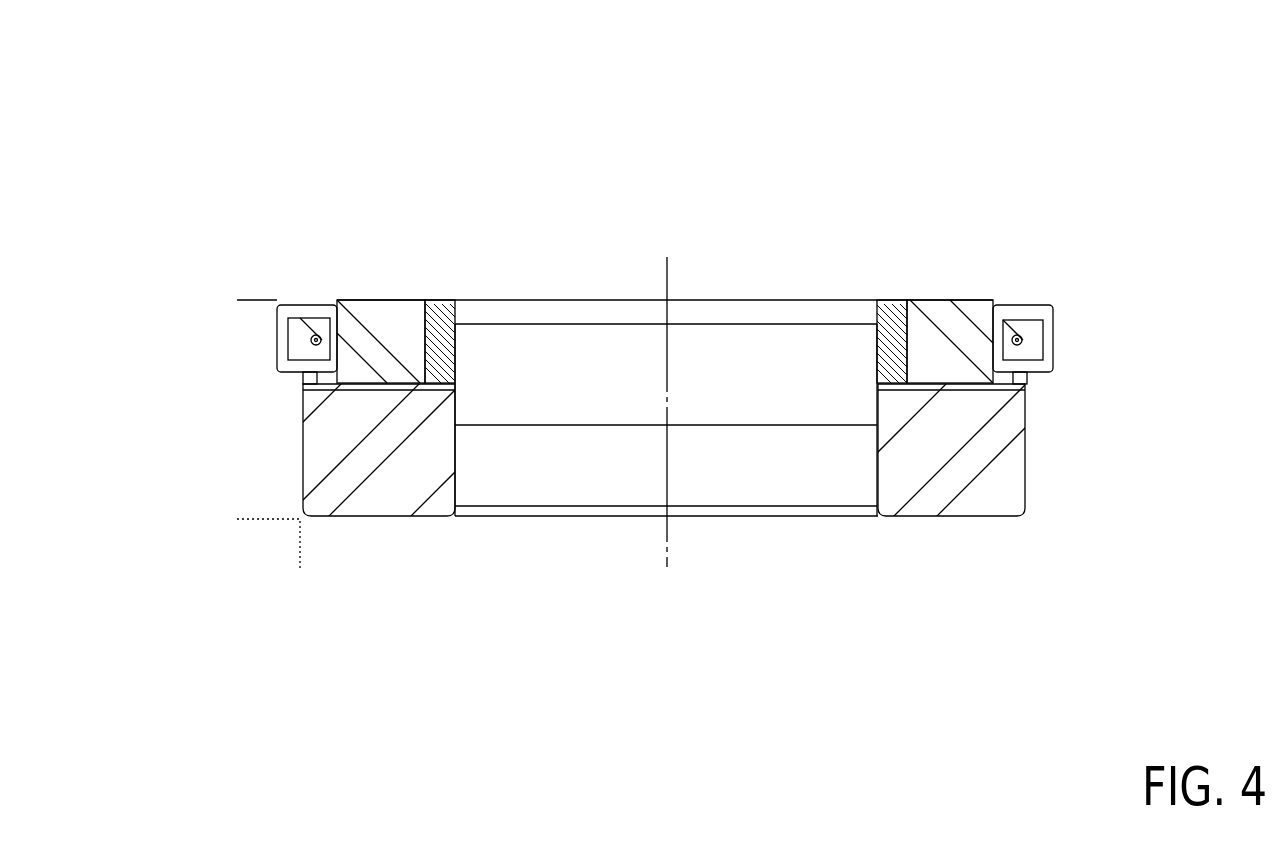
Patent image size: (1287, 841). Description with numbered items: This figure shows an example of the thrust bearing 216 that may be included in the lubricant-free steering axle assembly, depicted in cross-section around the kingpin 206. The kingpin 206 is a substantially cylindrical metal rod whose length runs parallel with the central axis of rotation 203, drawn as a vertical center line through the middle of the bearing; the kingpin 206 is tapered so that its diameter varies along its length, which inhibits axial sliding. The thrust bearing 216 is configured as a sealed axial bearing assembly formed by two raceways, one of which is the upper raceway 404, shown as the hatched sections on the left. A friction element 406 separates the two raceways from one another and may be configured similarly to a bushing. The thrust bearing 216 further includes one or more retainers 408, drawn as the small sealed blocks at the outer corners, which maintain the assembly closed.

The thrust bearing 216 is at (172, 78).
The central axis of rotation 203 is at (668, 275).
The kingpin 206 is at (790, 394).
The upper raceway 404 is at (380, 310).
The friction element 406 is at (947, 388).
The retainer 408 is at (290, 338).